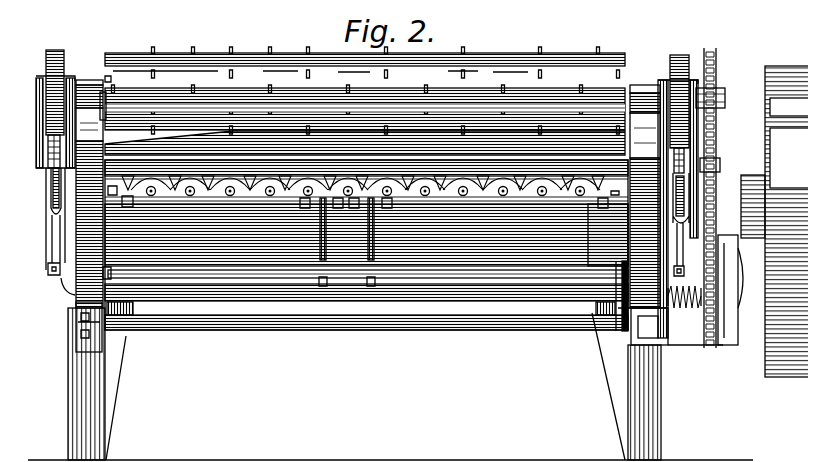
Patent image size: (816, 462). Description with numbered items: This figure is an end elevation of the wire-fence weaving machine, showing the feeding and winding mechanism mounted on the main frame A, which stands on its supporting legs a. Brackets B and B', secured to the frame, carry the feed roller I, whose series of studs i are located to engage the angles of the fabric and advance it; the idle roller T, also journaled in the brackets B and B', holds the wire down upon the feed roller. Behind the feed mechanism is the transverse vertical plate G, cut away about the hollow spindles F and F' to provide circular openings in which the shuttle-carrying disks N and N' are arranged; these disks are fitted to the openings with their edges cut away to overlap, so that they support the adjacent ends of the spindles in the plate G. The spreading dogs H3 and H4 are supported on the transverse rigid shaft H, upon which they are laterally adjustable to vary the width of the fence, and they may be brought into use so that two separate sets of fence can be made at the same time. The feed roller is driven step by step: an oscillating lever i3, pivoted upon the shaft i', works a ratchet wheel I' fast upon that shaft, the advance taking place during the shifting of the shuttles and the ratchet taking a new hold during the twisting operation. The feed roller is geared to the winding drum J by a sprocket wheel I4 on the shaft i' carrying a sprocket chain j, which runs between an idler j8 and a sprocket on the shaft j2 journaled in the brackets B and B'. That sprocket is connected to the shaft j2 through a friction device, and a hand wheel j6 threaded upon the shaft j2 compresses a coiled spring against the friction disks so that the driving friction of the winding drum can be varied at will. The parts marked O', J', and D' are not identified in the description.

The feed roller I is at (365, 51).
The studs i is at (366, 81).
The shaft i' is at (355, 89).
The transverse vertical plate G is at (274, 128).
The idle roller T is at (577, 143).
The shuttle-carrying disk N' is at (366, 268).
The transverse rigid shaft H is at (435, 192).
The main frame A is at (250, 243).
The winding drum J is at (365, 308).
The spreading dog H3 is at (315, 280).
The spreading dog H4 is at (362, 280).
The lower band O' is at (366, 298).
The hollow spindle F is at (366, 284).
The hollow spindle F' is at (406, 279).
The bracket B is at (68, 216).
The ratchet wheel I' is at (380, 182).
The oscillating lever i3 is at (47, 136).
The shuttle-carrying disk N is at (352, 264).
The bracket B' is at (670, 233).
The sprocket wheel I4 is at (710, 50).
The sprocket chain j is at (703, 157).
The hand wheel j6 is at (657, 322).
The right bracket J' is at (719, 307).
The idler j8 is at (718, 220).
The drum D' is at (786, 221).
The supporting leg a is at (106, 381).
The shaft j2 is at (625, 262).